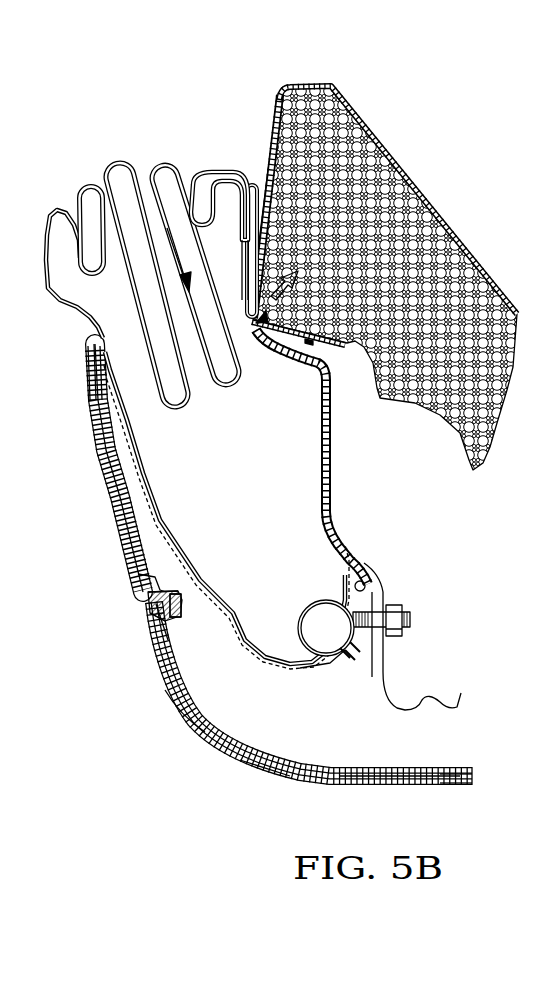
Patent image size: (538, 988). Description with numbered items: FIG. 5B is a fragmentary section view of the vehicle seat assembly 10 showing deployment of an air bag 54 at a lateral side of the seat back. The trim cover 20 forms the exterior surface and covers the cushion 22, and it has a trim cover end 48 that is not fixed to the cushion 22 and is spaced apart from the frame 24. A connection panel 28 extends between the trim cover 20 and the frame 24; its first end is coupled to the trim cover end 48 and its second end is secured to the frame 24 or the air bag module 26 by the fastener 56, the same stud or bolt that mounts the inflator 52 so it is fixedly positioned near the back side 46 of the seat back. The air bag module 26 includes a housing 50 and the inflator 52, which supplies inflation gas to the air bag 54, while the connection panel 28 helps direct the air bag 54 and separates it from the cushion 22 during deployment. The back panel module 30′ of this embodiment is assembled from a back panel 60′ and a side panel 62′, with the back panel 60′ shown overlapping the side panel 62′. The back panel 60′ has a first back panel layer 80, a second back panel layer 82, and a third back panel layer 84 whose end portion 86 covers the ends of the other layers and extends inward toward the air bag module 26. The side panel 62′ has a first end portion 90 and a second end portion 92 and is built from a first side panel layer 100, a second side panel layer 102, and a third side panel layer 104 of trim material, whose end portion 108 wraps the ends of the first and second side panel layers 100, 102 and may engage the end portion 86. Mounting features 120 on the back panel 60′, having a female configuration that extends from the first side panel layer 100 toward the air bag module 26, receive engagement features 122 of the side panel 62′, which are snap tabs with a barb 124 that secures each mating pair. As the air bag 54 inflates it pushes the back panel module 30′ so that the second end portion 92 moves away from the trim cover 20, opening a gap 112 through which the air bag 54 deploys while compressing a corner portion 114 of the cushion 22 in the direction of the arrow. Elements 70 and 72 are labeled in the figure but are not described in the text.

The seat assembly 10 is at (433, 130).
The trim cover 20 is at (460, 222).
The cushion 22 is at (438, 385).
The frame 24 is at (381, 572).
The air bag module 26 is at (292, 690).
The connection panel 28 is at (356, 545).
The back panel module 30′ is at (281, 787).
The back side 46 is at (402, 791).
The trim cover end 48 is at (351, 341).
The housing 50 is at (272, 680).
The inflator 52 is at (335, 643).
The air bag 54 is at (81, 187).
The fastener 56 is at (411, 620).
The back panel 60′ is at (389, 751).
The side panel 62′ is at (104, 495).
The curved portion 70 is at (212, 737).
The clip 72 is at (140, 620).
The first back panel layer 80 is at (471, 768).
The second back panel layer 82 is at (473, 780).
The third back panel layer 84 is at (471, 786).
The end portion 86 is at (147, 598).
The first end portion 90 is at (188, 588).
The second end portion 92 is at (74, 357).
The first side panel layer 100 is at (98, 333).
The second side panel layer 102 is at (92, 342).
The third side panel layer 104 is at (85, 352).
The end portion 108 is at (145, 596).
The gap 112 is at (147, 178).
The corner portion 114 is at (253, 330).
The mounting features 120 is at (184, 610).
The engagement features 122 is at (163, 650).
The barb 124 is at (183, 615).